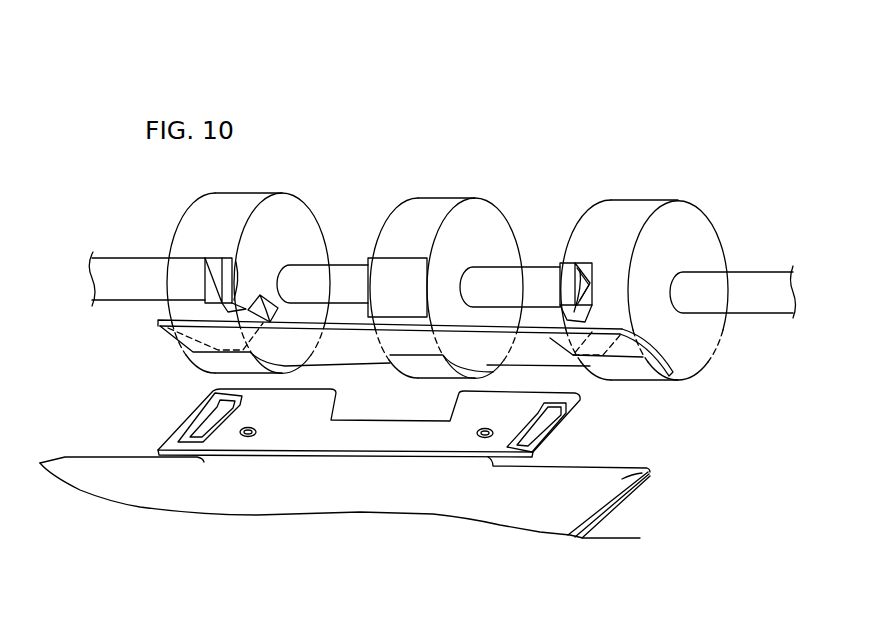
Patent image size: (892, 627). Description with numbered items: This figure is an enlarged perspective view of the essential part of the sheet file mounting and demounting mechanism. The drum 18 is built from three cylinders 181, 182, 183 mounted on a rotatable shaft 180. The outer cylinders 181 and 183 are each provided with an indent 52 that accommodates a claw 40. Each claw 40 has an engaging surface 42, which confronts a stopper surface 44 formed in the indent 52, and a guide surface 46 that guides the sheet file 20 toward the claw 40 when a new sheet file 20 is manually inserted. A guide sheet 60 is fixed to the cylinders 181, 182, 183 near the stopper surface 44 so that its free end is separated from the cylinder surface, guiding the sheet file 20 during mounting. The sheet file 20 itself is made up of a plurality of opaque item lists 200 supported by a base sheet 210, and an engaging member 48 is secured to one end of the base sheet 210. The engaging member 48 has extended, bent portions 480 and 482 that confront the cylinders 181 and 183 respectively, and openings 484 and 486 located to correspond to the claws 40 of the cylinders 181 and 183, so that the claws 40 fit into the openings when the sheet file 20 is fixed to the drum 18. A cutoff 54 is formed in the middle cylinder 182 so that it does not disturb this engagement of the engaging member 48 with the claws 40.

The drum 18 is at (442, 266).
The rotatable shaft 180 is at (130, 273).
The cylinder 181 is at (290, 207).
The cylinder 182 is at (442, 204).
The cylinder 183 is at (627, 212).
The indent 52 is at (214, 261).
The guide surface 46 is at (240, 300).
The claw 40 is at (262, 298).
The engaging surface 42 is at (278, 283).
The stopper surface 44 is at (264, 322).
The cutoff 54 is at (412, 299).
The guide sheet 60 is at (336, 357).
The engaging member 48 is at (377, 419).
The extended bent portion 480 is at (332, 400).
The extended bent portion 482 is at (462, 411).
The opening 484 is at (200, 408).
The opening 486 is at (568, 420).
The sheet file 20 is at (372, 522).
The item list 200 is at (573, 536).
The base sheet 210 is at (652, 474).